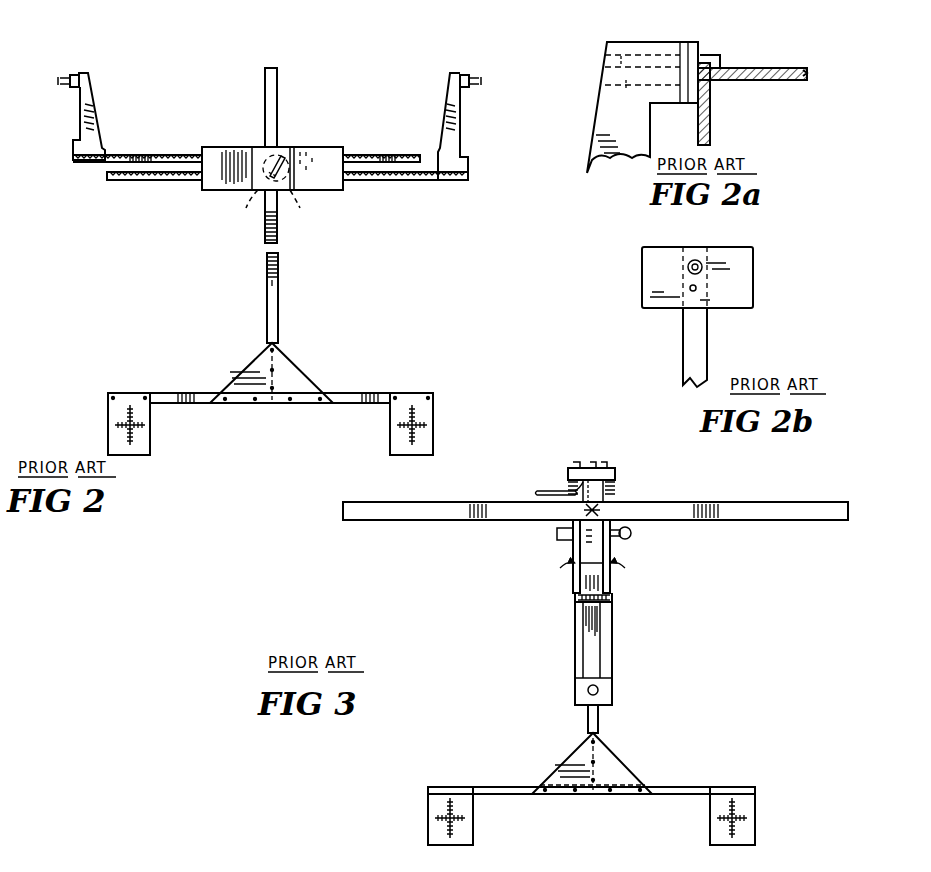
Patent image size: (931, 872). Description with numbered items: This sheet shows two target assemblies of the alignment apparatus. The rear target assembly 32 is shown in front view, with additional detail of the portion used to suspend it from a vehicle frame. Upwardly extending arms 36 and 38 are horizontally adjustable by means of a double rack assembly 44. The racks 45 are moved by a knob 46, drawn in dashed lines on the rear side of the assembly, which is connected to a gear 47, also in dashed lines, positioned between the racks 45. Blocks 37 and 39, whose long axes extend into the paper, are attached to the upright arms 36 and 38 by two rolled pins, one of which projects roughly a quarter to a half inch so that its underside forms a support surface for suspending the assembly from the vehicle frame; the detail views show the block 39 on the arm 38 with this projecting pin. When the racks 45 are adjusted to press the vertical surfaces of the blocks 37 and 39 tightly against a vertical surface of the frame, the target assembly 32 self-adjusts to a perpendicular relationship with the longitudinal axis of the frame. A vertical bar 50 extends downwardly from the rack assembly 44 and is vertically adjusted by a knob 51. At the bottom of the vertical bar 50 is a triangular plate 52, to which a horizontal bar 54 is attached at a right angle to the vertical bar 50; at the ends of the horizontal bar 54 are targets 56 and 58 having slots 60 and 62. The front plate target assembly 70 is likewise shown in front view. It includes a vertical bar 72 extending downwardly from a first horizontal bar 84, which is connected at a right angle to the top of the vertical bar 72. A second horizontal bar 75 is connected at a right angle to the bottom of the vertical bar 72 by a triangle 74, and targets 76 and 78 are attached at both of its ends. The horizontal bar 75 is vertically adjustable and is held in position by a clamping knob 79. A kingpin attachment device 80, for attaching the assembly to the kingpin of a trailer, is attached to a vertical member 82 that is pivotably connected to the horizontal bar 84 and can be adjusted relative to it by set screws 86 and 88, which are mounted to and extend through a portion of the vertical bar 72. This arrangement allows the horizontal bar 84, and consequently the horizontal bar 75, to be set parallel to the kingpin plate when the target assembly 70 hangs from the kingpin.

In FIG. 2, the rear target assembly 32 is at (316, 124).
In FIG. 2, the upwardly extending arm 36 is at (72, 166).
In FIG. 2, the block 37 is at (68, 82).
In FIG. 2, the upwardly extending arm 38 is at (452, 162).
In FIG. 2a, the upwardly extending arm 38 is at (612, 125).
In FIG. 2b, the upwardly extending arm 38 is at (703, 338).
In FIG. 2, the block 39 is at (476, 82).
In FIG. 2a, the block 39 is at (694, 42).
In FIG. 2b, the block 39 is at (743, 262).
In FIG. 2, the double rack assembly 44 is at (336, 194).
In FIG. 2, the racks 45 is at (148, 152).
In FIG. 2, the knob 46 is at (229, 208).
In FIG. 2, the gear 47 is at (307, 208).
In FIG. 2, the vertical bar 50 is at (279, 308).
In FIG. 2, the knob 51 is at (268, 158).
In FIG. 2, the triangular plate 52 is at (298, 375).
In FIG. 2, the horizontal bar 54 is at (350, 392).
In FIG. 2, the target 56 is at (150, 452).
In FIG. 2, the target 58 is at (433, 452).
In FIG. 2, the slot 60 is at (138, 424).
In FIG. 2, the slot 62 is at (422, 424).
In FIG. 3, the front plate target assembly 70 is at (652, 486).
In FIG. 3, the vertical bar 72 is at (612, 618).
In FIG. 3, the triangle 74 is at (610, 765).
In FIG. 3, the second horizontal bar 75 is at (673, 786).
In FIG. 3, the target 76 is at (428, 812).
In FIG. 3, the target 78 is at (748, 812).
In FIG. 3, the clamping knob 79 is at (584, 512).
In FIG. 3, the kingpin attachment device 80 is at (621, 473).
In FIG. 3, the vertical member 82 is at (588, 470).
In FIG. 3, the first horizontal bar 84 is at (762, 521).
In FIG. 3, the set screw 86 is at (557, 538).
In FIG. 3, the set screw 88 is at (631, 535).